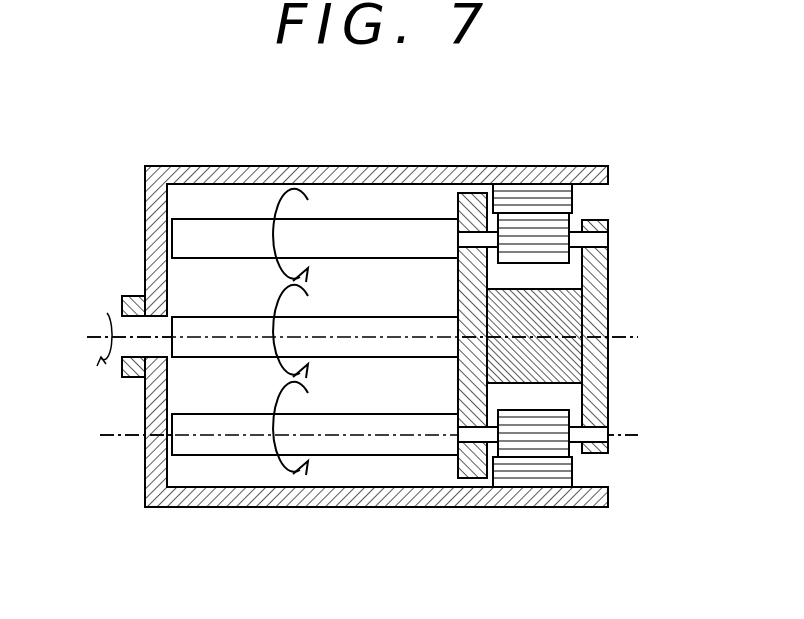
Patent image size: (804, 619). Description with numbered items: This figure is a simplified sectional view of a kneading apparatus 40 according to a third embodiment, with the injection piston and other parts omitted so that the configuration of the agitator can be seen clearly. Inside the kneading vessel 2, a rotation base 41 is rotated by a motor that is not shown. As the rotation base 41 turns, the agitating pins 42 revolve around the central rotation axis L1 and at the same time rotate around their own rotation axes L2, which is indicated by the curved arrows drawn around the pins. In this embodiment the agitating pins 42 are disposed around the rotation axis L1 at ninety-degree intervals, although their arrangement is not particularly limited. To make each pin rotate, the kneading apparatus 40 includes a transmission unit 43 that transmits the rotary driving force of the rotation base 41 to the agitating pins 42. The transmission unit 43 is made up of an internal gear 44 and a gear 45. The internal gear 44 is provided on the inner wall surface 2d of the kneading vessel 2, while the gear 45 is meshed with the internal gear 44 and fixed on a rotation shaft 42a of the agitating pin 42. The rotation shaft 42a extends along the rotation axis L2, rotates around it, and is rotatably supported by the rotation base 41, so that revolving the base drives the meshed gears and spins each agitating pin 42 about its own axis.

The kneading vessel 2 is at (365, 377).
The inner wall surface 2d is at (388, 487).
The kneading apparatus 40 is at (574, 281).
The rotation base 41 is at (608, 310).
The agitating pins 42 is at (400, 228).
The rotation shaft 42a is at (602, 242).
The transmission unit 43 is at (588, 477).
The internal gear 44 is at (547, 193).
The gear 45 is at (568, 225).
The rotation axis L1 is at (346, 339).
The rotation axes L2 is at (352, 436).